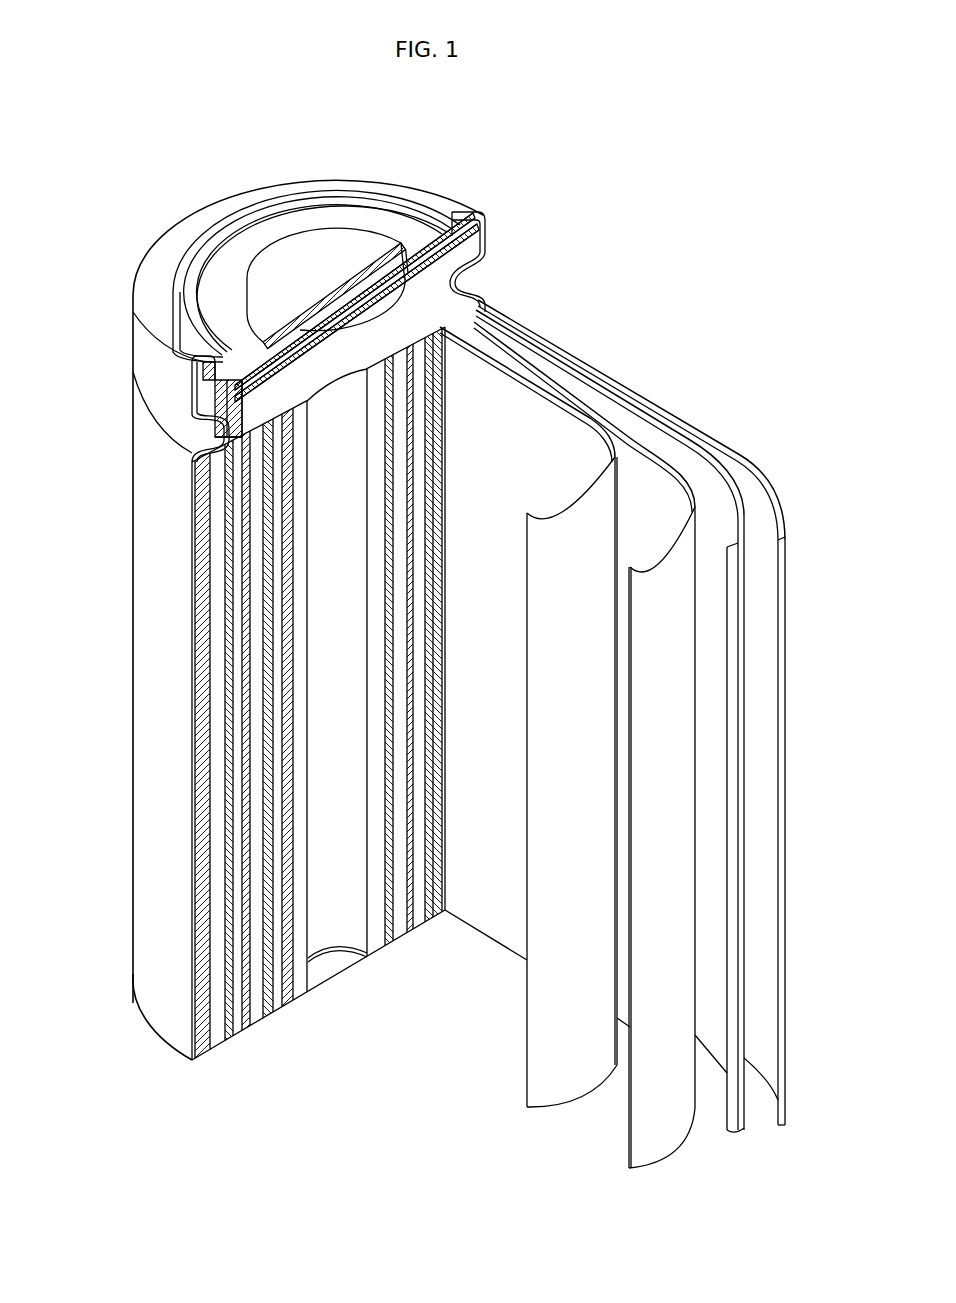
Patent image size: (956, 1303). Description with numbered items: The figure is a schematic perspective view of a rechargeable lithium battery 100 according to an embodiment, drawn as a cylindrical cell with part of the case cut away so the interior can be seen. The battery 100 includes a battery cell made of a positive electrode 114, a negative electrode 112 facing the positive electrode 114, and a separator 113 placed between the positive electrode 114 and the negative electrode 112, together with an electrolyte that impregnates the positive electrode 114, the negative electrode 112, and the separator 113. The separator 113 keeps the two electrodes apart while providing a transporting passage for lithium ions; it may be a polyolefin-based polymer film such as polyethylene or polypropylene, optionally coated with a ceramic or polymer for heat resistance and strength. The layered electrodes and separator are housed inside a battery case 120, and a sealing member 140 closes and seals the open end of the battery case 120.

The rechargeable lithium battery 100 is at (482, 174).
The negative electrode 112 is at (747, 480).
The separator 113 is at (527, 378).
The positive electrode 114 is at (630, 440).
The battery case 120 is at (134, 669).
The sealing member 140 is at (292, 230).